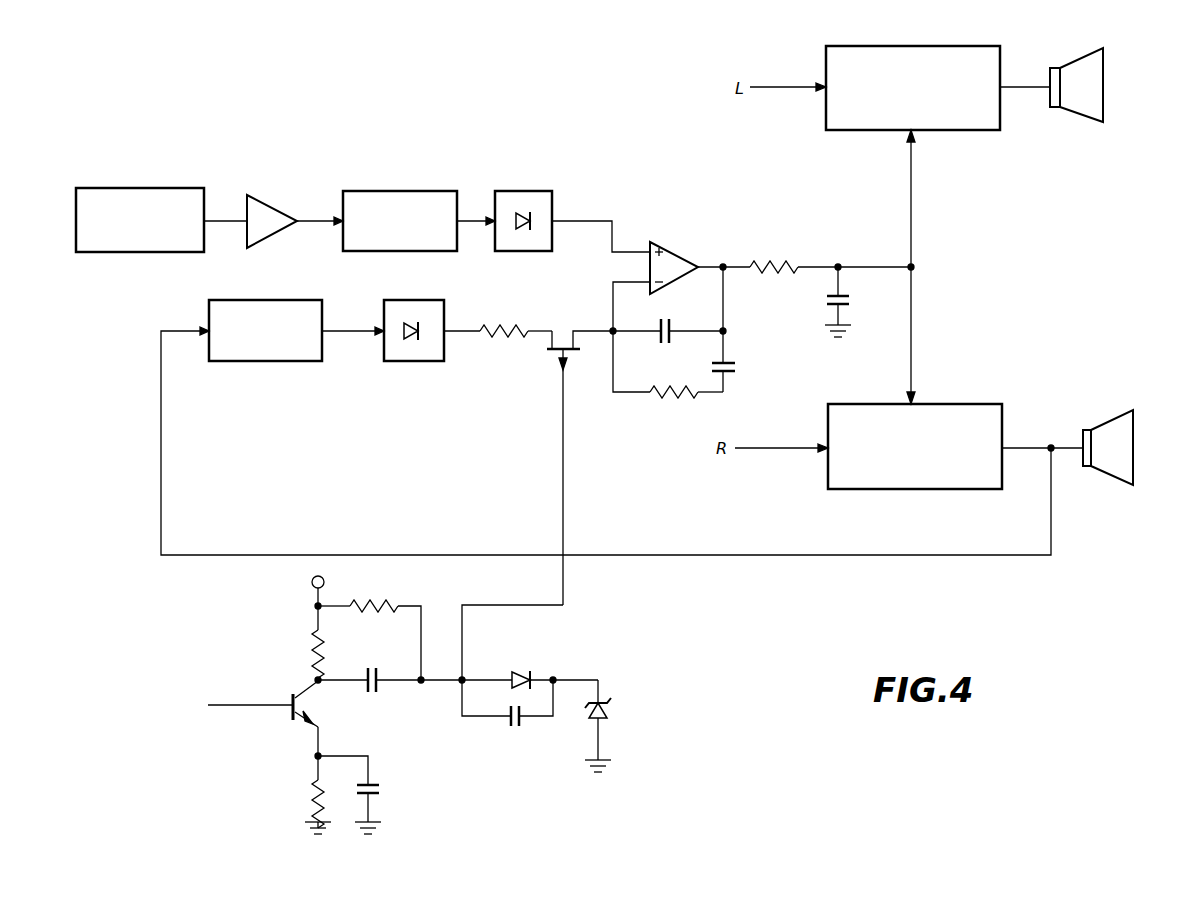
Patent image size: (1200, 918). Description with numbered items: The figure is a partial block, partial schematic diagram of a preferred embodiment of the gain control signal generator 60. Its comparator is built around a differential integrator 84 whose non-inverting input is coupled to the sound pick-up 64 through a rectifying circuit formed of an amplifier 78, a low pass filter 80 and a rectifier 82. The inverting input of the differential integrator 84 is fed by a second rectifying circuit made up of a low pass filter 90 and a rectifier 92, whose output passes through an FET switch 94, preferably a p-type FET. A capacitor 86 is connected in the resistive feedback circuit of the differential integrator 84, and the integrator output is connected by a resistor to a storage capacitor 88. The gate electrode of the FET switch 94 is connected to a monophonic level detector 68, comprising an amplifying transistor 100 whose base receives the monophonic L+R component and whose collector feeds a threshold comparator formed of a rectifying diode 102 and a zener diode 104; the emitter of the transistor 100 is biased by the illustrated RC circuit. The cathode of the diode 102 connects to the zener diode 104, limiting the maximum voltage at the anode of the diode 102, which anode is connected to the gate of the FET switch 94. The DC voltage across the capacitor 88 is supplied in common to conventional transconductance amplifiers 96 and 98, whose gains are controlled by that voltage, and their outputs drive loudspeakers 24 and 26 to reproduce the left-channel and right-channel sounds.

The loudspeaker 24 is at (1077, 115).
The loudspeaker 26 is at (1104, 428).
The gain control signal generator 60 is at (579, 441).
The sound pick-up 64 is at (162, 192).
The monophonic level detector 68 is at (431, 683).
The amplifier 78 is at (287, 188).
The low pass filter 80 is at (418, 194).
The rectifier 82 is at (523, 192).
The differential integrator 84 is at (672, 253).
The capacitor 86 is at (737, 367).
The storage capacitor 88 is at (850, 298).
The low pass filter 90 is at (252, 362).
The rectifier 92 is at (408, 362).
The FET switch 94 is at (549, 356).
The transconductance amplifier 96 is at (963, 132).
The transconductance amplifier 98 is at (989, 398).
The amplifying transistor 100 is at (300, 703).
The rectifying diode 102 is at (522, 672).
The zener diode 104 is at (612, 714).